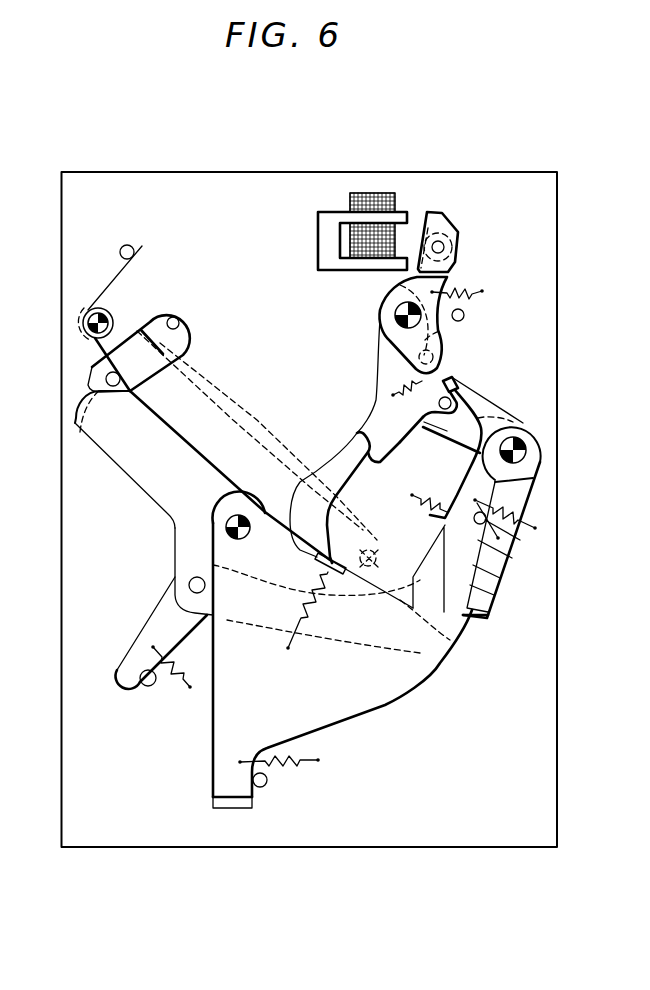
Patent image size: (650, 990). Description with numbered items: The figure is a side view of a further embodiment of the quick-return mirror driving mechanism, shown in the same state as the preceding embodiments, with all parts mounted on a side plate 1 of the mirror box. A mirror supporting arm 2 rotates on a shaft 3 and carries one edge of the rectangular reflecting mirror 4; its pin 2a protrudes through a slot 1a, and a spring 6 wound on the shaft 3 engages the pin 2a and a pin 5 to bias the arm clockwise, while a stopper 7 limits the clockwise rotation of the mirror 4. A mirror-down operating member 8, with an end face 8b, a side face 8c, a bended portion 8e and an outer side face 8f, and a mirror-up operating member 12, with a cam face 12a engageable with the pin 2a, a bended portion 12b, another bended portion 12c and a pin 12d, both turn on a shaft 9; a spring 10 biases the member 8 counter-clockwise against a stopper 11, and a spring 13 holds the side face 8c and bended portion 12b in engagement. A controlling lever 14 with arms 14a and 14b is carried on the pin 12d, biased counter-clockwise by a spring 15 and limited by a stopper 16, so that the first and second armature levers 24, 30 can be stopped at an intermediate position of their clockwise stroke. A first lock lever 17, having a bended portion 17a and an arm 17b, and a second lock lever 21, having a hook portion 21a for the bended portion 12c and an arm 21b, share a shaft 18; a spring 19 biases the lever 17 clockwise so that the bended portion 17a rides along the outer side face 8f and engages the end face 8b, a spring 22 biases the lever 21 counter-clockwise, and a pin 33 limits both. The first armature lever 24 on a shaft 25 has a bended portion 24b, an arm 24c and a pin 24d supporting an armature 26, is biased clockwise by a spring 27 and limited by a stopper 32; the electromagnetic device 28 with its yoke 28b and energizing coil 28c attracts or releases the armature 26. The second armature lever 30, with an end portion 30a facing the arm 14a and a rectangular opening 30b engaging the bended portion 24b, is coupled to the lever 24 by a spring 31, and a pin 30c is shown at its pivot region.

The side plate 1 is at (260, 160).
The slot 1a is at (175, 322).
The mirror supporting arm 2 is at (147, 352).
The pin 2a is at (106, 380).
The shaft 3 is at (83, 328).
The reflecting mirror 4 is at (250, 410).
The pin 5 is at (125, 245).
The spring 6 is at (110, 283).
The stopper 7 is at (376, 558).
The mirror-down operating member 8 is at (383, 704).
The end face 8b is at (490, 570).
The side face 8c is at (355, 605).
The bended portion 8e is at (232, 808).
The outer side face 8f is at (482, 525).
The shaft 9 is at (233, 536).
The spring 10 is at (300, 765).
The stopper 11 is at (265, 786).
The mirror-up operating member 12 is at (130, 470).
The cam face 12a is at (80, 400).
The bended portion 12b is at (340, 557).
The bended portion 12c is at (490, 612).
The pin 12d is at (190, 580).
The spring 13 is at (288, 648).
The controlling lever 14 is at (150, 622).
The arm 14a is at (352, 438).
The arm 14b is at (122, 665).
The spring 15 is at (190, 687).
The stopper 16 is at (148, 686).
The first lock lever 17 is at (540, 502).
The bended portion 17a is at (472, 612).
The arm 17b is at (442, 443).
The shaft 18 is at (526, 450).
The spring 19 is at (424, 496).
The second lock lever 21 is at (528, 433).
The hook portion 21a is at (455, 640).
The arm 21b is at (458, 380).
The spring 22 is at (540, 526).
The first armature lever 24 is at (386, 301).
The bended portion 24b is at (434, 360).
The arm 24c is at (450, 258).
The pin 24d is at (445, 244).
The shaft 25 is at (398, 323).
The armature 26 is at (437, 214).
The spring 27 is at (482, 291).
The electromagnetic device 28 is at (310, 229).
The yoke 28b is at (332, 212).
The energizing coil 28c is at (372, 193).
The second armature lever 30 is at (375, 350).
The end portion 30a is at (377, 462).
The rectangular opening 30b is at (432, 337).
The pin 30c is at (438, 403).
The spring 31 is at (412, 384).
The stopper 32 is at (464, 315).
The pin 33 is at (498, 538).